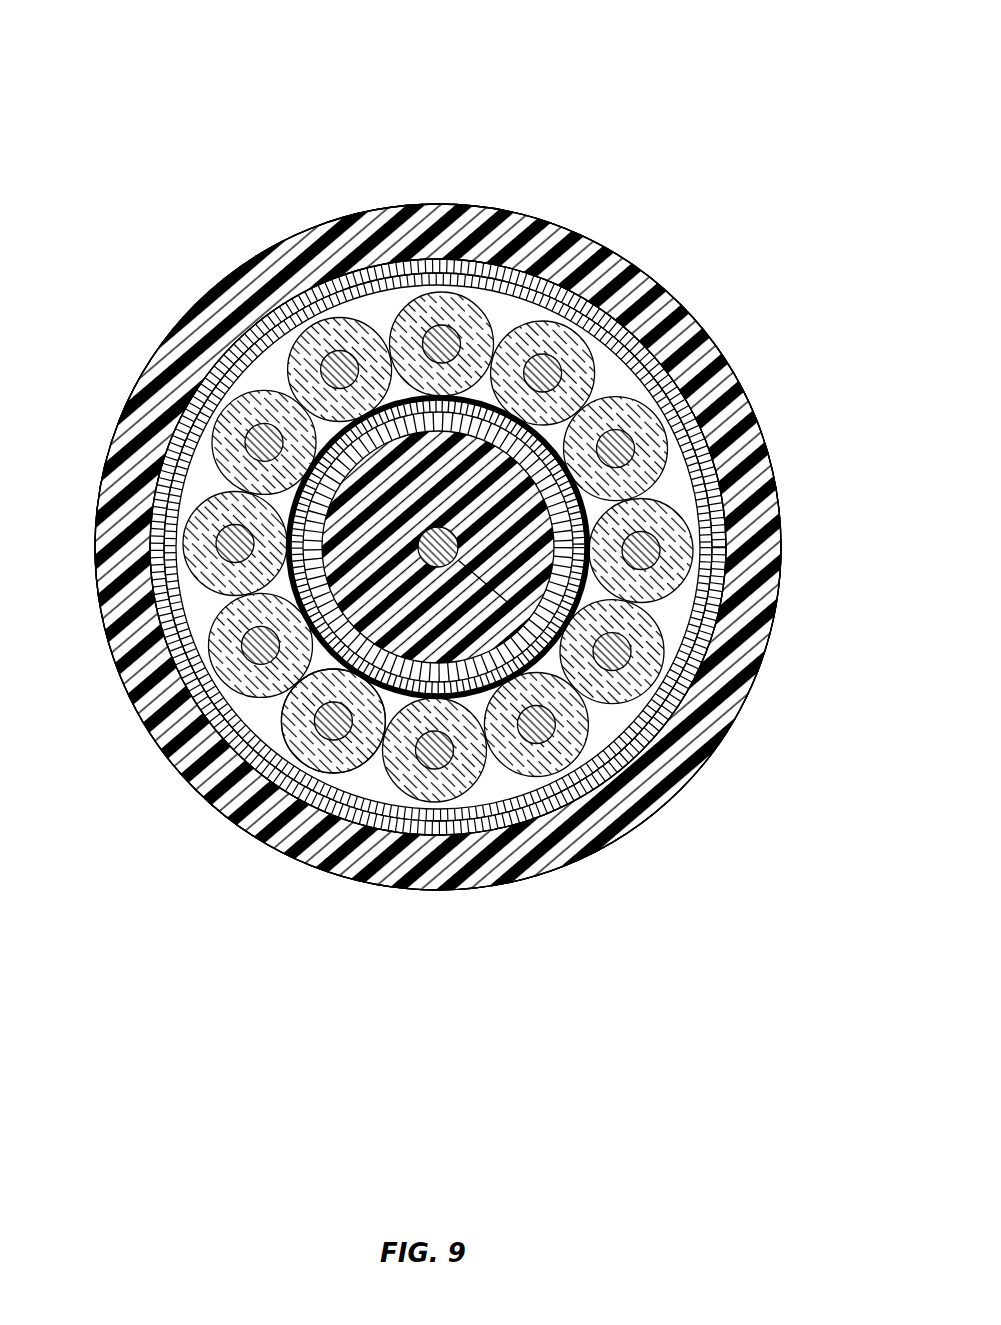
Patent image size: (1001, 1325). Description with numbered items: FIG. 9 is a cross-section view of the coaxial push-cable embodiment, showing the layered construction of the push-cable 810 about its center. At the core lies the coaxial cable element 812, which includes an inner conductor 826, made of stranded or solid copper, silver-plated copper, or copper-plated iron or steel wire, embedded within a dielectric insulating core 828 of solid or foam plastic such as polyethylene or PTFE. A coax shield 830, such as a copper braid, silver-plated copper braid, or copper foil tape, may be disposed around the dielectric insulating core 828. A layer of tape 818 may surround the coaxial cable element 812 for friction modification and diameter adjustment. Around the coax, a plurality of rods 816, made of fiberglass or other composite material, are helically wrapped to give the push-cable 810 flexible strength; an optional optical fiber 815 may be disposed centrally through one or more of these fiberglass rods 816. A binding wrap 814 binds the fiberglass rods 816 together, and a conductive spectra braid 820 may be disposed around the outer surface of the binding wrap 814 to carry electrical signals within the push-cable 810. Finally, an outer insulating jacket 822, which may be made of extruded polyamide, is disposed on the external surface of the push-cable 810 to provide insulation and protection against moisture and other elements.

The push-cable 810 is at (155, 90).
The coaxial cable element 812 is at (657, 348).
The binding wrap 814 is at (193, 397).
The optical fiber 815 is at (300, 740).
The rods 816 is at (263, 393).
The tape 818 is at (475, 397).
The spectra braid 820 is at (460, 867).
The outer insulating jacket 822 is at (375, 263).
The inner conductor 826 is at (628, 792).
The dielectric insulating core 828 is at (690, 733).
The coax shield 830 is at (552, 738).